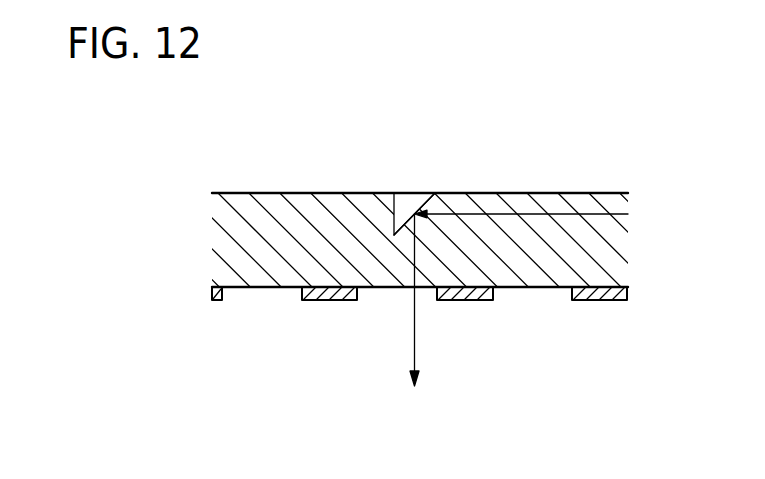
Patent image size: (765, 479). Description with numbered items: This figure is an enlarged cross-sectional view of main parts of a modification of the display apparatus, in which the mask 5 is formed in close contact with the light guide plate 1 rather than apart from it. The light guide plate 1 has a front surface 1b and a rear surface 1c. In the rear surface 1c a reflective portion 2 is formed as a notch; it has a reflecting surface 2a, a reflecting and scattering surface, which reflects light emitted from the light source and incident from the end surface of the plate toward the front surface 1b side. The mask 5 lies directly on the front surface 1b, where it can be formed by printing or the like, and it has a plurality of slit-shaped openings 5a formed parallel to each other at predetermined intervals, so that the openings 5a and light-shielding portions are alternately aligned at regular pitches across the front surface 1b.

The light guide plate 1 is at (523, 193).
The front surface 1b is at (553, 288).
The rear surface 1c is at (586, 192).
The reflective portion 2 is at (404, 207).
The reflecting surface 2a is at (421, 205).
The mask 5 is at (608, 300).
The opening 5a is at (493, 298).